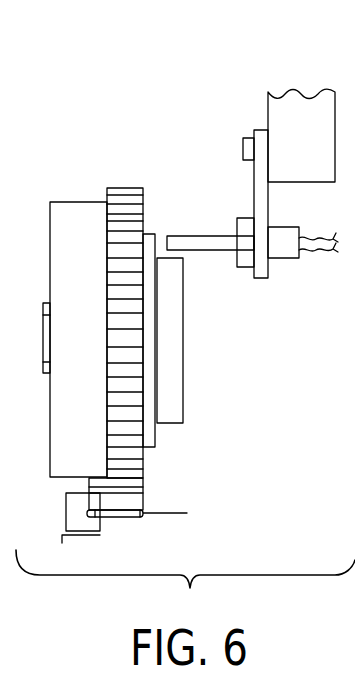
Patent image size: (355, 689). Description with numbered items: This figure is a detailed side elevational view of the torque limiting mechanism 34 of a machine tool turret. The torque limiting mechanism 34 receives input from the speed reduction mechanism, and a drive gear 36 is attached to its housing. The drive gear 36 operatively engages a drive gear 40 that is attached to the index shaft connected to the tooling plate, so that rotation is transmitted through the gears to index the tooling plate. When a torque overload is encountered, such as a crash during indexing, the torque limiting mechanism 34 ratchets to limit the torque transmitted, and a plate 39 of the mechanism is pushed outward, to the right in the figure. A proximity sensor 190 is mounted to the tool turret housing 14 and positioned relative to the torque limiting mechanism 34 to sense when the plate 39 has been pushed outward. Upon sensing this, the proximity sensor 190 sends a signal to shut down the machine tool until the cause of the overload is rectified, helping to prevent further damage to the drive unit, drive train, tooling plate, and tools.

The tool turret housing 14 is at (298, 118).
The torque limiting mechanism 34 is at (87, 235).
The drive gear 36 is at (133, 222).
The plate 39 is at (150, 235).
The drive gear 40 is at (132, 502).
The proximity sensor 190 is at (280, 247).